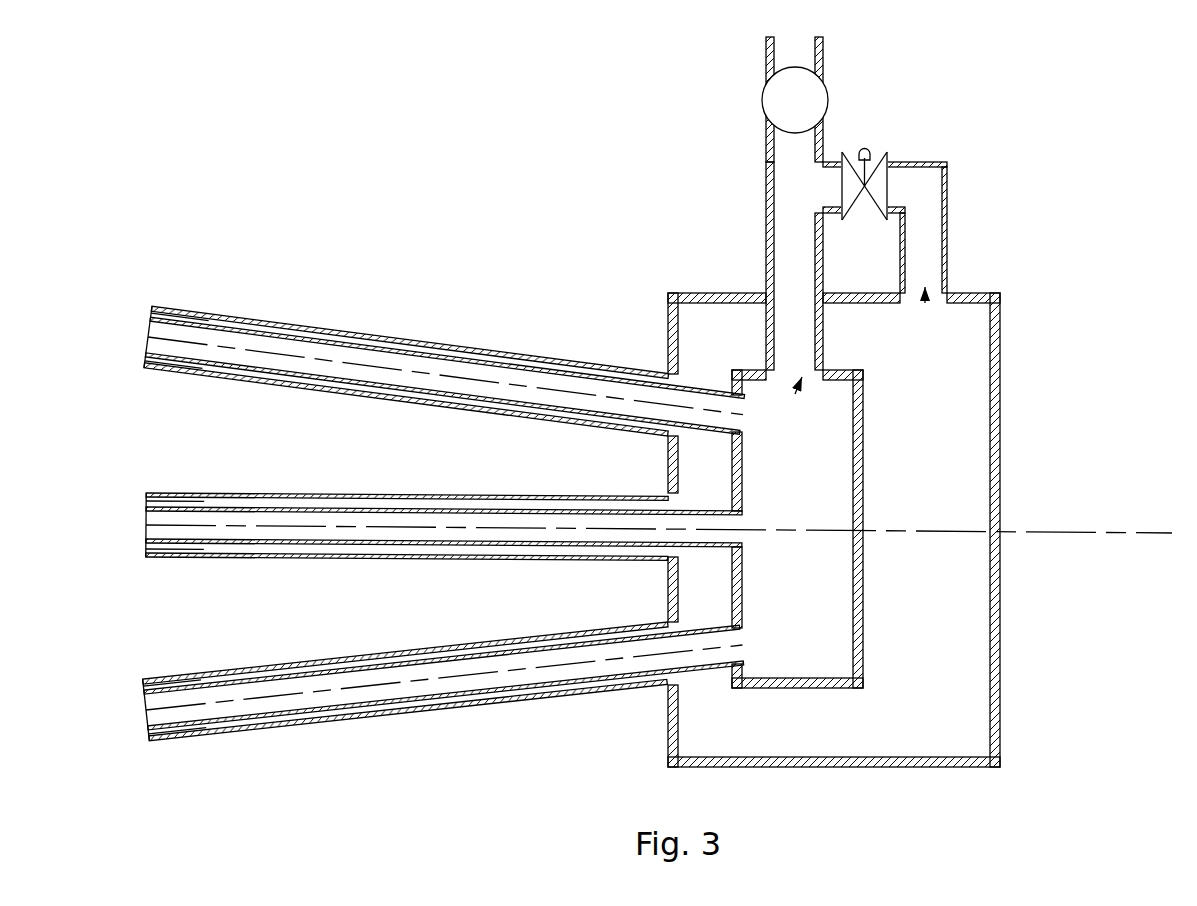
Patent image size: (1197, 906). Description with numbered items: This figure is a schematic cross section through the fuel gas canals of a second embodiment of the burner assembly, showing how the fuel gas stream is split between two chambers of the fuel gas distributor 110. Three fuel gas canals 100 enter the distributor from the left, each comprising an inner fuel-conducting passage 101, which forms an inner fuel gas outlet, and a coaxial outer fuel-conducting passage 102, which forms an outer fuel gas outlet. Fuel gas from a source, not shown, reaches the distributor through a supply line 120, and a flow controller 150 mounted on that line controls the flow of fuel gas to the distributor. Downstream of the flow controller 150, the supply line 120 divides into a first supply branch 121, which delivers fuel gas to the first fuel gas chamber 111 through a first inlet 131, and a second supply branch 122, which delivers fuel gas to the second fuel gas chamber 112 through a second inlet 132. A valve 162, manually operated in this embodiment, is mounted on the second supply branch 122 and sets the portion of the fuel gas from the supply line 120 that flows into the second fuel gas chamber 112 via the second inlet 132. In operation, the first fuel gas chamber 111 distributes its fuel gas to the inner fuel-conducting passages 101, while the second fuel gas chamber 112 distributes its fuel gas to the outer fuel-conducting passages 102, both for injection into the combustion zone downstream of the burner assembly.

The fuel gas canal 100 is at (342, 405).
The inner fuel-conducting passage 101 is at (137, 338).
The outer fuel-conducting passage 102 is at (320, 333).
The fuel gas distributor 110 is at (1053, 412).
The first fuel gas chamber 111 is at (797, 529).
The second fuel gas chamber 112 is at (928, 693).
The supply line 120 is at (782, 53).
The first supply branch 121 is at (792, 261).
The second supply branch 122 is at (928, 253).
The first inlet 131 is at (785, 401).
The second inlet 132 is at (927, 319).
The flow controller 150 is at (795, 100).
The valve 162 is at (886, 138).